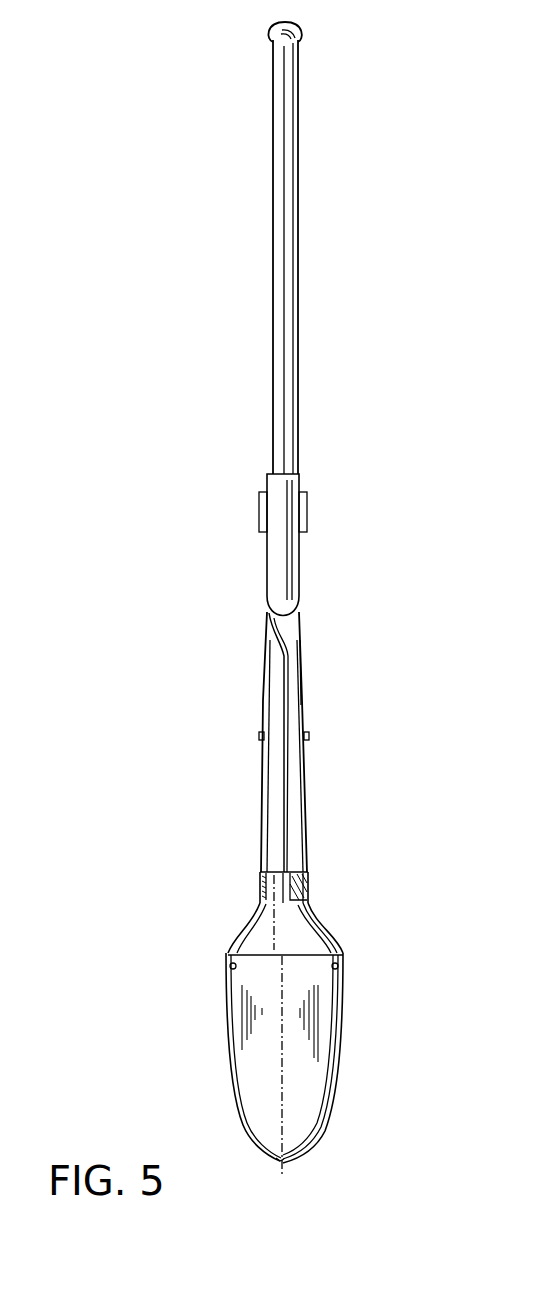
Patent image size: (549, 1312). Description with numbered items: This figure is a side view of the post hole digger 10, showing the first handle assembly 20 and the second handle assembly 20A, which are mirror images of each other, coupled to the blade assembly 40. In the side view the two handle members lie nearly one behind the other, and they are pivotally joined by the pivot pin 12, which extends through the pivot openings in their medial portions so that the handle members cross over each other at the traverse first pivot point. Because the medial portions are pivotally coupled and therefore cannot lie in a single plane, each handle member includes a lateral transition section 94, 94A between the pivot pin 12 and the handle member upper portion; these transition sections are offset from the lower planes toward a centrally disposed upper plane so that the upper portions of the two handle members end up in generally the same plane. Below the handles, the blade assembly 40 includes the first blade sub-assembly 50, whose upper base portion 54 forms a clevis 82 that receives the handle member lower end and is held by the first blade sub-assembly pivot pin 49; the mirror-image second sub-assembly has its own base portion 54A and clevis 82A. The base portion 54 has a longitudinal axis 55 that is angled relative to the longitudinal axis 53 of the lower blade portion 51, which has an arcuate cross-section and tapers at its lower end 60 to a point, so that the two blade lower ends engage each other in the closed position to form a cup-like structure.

The post hole digger 10 is at (183, 110).
The second handle assembly 20A is at (299, 232).
The first handle assembly 20 is at (262, 705).
The pivot pin 12 is at (309, 735).
The lateral transition section 94 is at (262, 660).
The lateral transition section 94A is at (303, 668).
The blade assembly 40 is at (144, 1032).
The first blade sub-assembly pivot pin 49 is at (305, 872).
The clevis 82 is at (260, 885).
The clevis 82A is at (310, 890).
The longitudinal axis 55 is at (255, 915).
The base portion 54 is at (240, 940).
The base portion 54A is at (322, 920).
The first blade sub-assembly 50 is at (240, 1082).
The blade portion 51 is at (233, 1015).
The longitudinal axis 53 is at (285, 1052).
The lower end 60 is at (285, 1160).